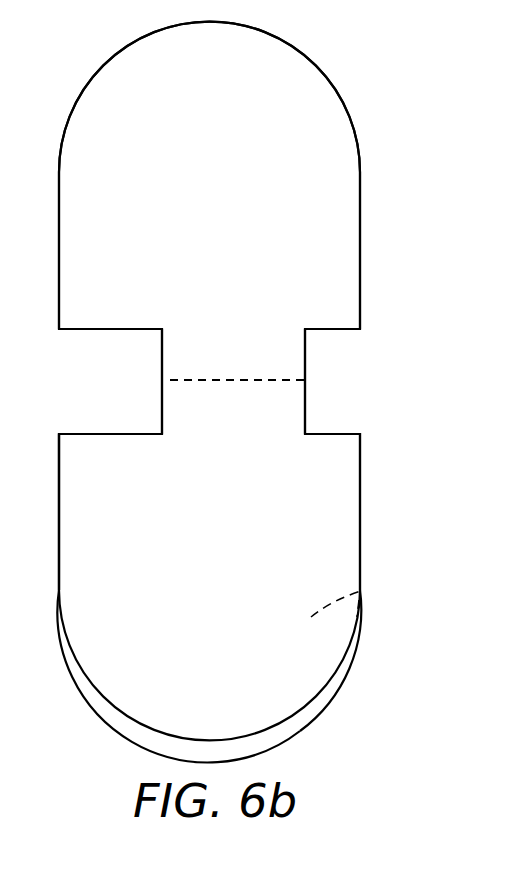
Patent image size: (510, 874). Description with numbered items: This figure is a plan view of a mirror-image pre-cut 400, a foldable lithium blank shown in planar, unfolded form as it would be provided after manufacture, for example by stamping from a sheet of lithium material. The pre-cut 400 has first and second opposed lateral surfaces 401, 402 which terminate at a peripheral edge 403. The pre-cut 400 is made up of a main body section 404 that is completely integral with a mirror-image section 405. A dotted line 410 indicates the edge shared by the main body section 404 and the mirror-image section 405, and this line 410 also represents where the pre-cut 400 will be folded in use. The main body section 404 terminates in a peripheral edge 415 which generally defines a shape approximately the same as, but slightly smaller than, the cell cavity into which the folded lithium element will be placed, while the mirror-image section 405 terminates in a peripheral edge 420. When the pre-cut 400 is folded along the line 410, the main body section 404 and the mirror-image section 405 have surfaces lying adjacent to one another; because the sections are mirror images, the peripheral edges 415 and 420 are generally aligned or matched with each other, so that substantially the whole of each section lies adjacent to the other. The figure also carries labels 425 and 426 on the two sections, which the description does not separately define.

The mirror-image pre-cut 400 is at (381, 196).
The first lateral surface 401 is at (242, 647).
The second lateral surface 402 is at (358, 595).
The peripheral edge 403 is at (328, 680).
The main body section 404 is at (360, 486).
The mirror-image section 405 is at (360, 301).
The dotted line 410 is at (237, 378).
The peripheral edge of main body section 415 is at (277, 720).
The peripheral edge of mirror-image section 420 is at (360, 246).
The lower chamber 425 is at (213, 551).
The upper chamber 426 is at (235, 181).